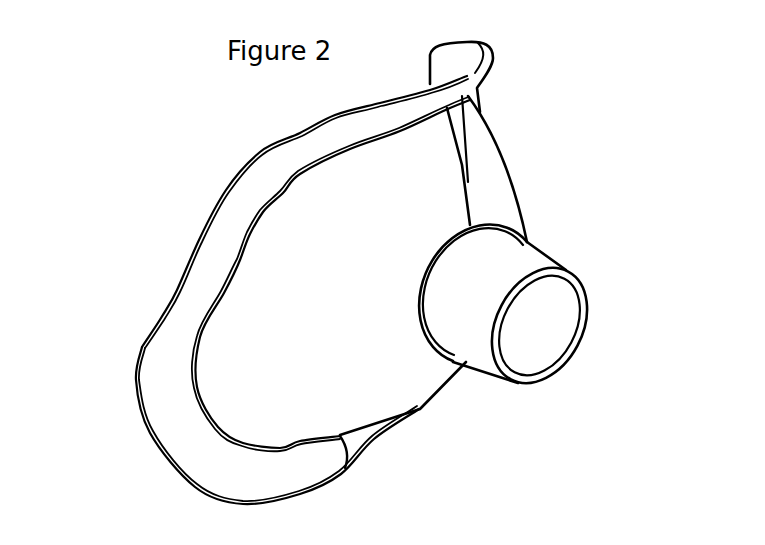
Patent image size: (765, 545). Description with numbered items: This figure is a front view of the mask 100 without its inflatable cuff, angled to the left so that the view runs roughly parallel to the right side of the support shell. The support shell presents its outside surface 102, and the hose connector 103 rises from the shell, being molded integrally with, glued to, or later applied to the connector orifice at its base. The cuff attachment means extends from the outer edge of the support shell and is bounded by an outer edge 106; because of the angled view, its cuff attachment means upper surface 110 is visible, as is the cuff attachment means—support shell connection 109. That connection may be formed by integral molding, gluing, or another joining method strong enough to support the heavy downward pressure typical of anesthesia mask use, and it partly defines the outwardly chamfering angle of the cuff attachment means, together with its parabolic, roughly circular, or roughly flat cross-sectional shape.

The mask 100 is at (497, 89).
The outside surface 102 is at (495, 185).
The hose connector 103 is at (527, 257).
The outer edge 106 is at (188, 262).
The cuff attachment means—support shell connection 109 is at (225, 427).
The cuff attachment means upper surface 110 is at (165, 424).